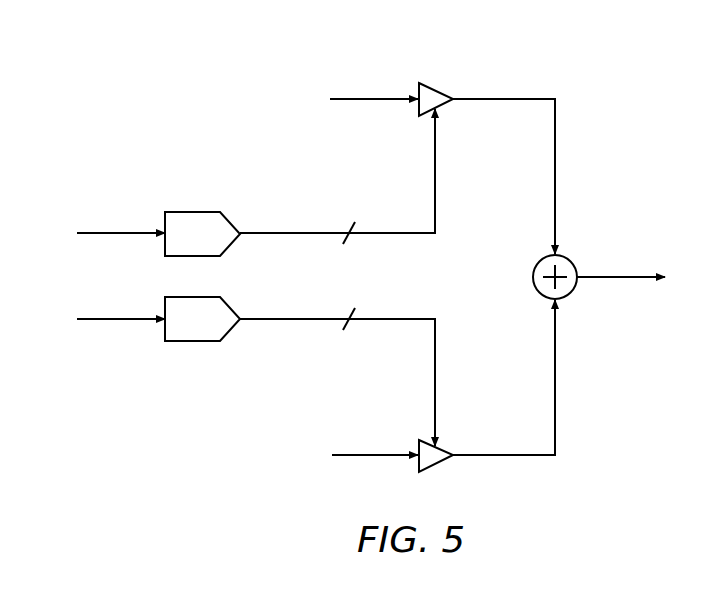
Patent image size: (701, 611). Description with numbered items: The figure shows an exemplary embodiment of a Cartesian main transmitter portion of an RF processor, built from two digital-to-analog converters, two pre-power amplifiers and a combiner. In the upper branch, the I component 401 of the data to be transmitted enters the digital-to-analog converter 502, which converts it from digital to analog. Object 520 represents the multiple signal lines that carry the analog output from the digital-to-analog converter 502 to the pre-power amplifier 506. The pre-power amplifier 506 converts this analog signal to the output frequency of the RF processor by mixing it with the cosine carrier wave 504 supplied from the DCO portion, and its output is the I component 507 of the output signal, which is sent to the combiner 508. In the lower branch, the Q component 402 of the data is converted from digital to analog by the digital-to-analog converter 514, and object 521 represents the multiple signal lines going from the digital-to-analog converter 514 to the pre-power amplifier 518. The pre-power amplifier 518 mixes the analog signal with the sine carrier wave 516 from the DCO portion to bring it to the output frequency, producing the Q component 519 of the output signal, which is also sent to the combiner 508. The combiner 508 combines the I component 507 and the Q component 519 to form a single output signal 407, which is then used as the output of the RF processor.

The I component 401 is at (118, 232).
The Q component 402 is at (118, 322).
The output signal 407 is at (615, 275).
The digital-to-analog converter 502 is at (193, 212).
The cosine carrier wave 504 is at (378, 97).
The pre-power amplifier 506 is at (433, 86).
The I component of the output signal 507 is at (525, 97).
The combiner 508 is at (572, 294).
The digital-to-analog converter 514 is at (192, 342).
The sine carrier wave 516 is at (375, 457).
The pre-power amplifier 518 is at (440, 467).
The Q component of the output signal 519 is at (525, 458).
The multiple signal lines 520 is at (294, 232).
The multiple signal lines 521 is at (297, 322).